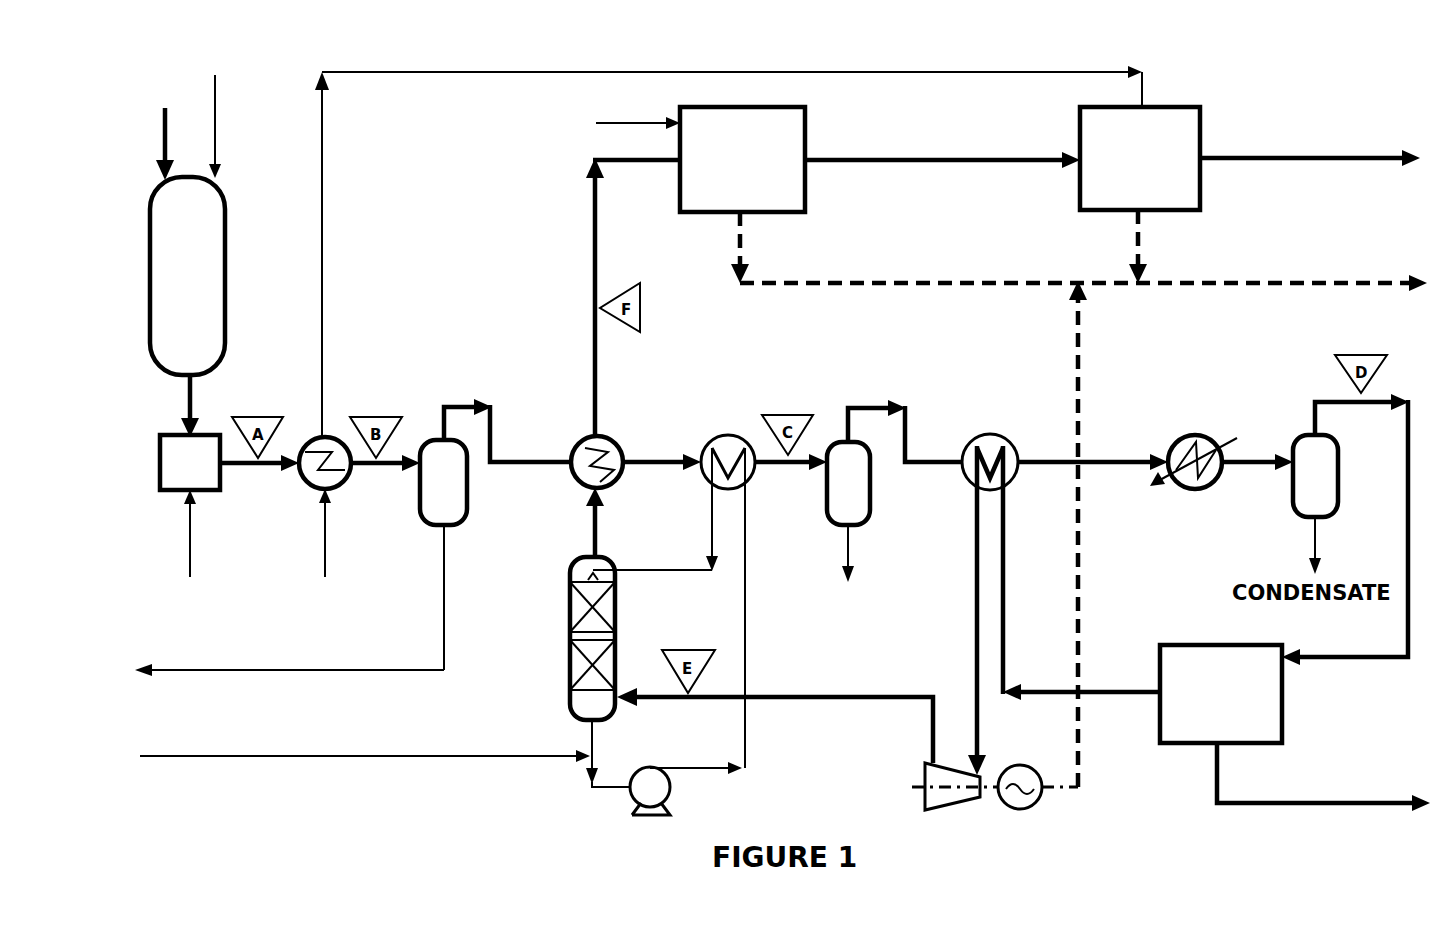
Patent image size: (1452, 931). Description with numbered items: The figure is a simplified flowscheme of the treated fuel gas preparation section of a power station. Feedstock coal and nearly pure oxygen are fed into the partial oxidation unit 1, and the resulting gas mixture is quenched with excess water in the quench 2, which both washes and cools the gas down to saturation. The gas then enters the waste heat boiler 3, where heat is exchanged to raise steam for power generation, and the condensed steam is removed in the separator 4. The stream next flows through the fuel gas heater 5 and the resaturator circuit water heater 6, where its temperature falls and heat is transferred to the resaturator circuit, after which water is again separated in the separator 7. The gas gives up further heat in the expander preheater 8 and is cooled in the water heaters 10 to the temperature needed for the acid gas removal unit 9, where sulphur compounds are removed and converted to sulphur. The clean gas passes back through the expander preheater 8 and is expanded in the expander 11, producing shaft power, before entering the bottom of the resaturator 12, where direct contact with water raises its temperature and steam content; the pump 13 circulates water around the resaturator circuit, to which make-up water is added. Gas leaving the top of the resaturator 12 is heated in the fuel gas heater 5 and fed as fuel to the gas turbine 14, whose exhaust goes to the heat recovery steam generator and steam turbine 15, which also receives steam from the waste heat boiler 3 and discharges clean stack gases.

The partial oxidation unit 1 is at (203, 247).
The quench 2 is at (175, 448).
The waste heat boiler 3 is at (305, 478).
The separator 4 is at (432, 475).
The fuel gas heater 5 is at (582, 445).
The resaturator circuit water heater 6 is at (715, 445).
The separator 7 is at (860, 480).
The expander preheater 8 is at (978, 438).
The acid gas removal unit 9 is at (1255, 690).
The water heaters 10 is at (1178, 435).
The expander 11 is at (938, 780).
The resaturator 12 is at (573, 628).
The pump 13 is at (645, 793).
The gas turbine 14 is at (780, 183).
The heat recovery steam generator and steam turbine 15 is at (1093, 183).